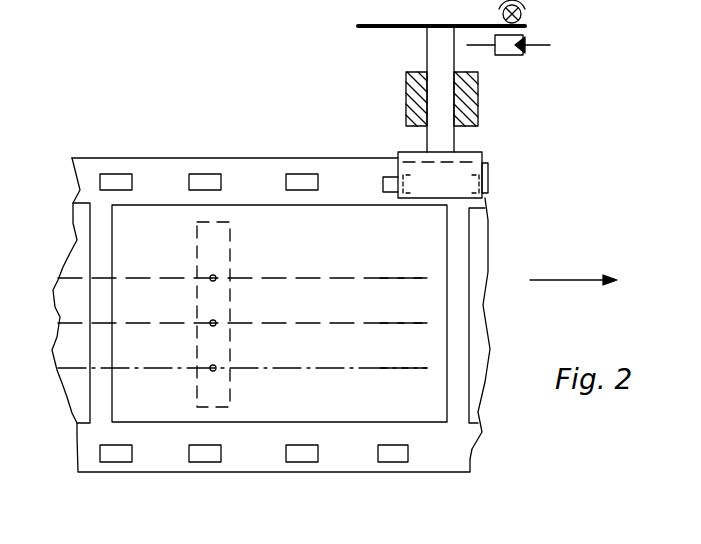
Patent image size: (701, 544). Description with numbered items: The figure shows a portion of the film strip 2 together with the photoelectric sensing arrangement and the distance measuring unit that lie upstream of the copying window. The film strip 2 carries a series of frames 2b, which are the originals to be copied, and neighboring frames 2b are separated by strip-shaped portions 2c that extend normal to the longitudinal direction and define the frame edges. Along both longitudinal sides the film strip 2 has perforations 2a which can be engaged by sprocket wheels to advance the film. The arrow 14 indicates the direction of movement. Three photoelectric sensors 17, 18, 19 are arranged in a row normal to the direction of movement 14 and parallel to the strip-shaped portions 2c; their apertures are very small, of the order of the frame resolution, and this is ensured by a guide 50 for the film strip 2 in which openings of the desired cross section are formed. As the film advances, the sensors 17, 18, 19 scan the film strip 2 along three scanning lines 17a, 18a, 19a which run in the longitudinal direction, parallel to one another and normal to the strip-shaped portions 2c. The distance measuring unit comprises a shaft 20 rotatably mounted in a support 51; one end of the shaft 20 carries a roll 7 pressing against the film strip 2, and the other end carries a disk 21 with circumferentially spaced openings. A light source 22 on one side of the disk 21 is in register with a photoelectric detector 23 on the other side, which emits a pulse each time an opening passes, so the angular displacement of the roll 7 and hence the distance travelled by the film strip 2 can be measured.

The film strip 2 is at (433, 462).
The perforations 2a is at (128, 180).
The frames 2b is at (157, 204).
The strip-shaped portions 2c is at (97, 258).
The roll 7 is at (470, 169).
The direction of movement 14 is at (566, 278).
The photoelectric sensor 17 is at (216, 276).
The photoelectric sensor 18 is at (216, 321).
The photoelectric sensor 19 is at (215, 369).
The scanning line 17a is at (406, 277).
The scanning line 18a is at (408, 322).
The scanning line 19a is at (412, 372).
The shaft 20 is at (427, 55).
The disk 21 is at (368, 28).
The light source 22 is at (522, 18).
The photoelectric detector 23 is at (518, 55).
The guide 50 is at (197, 397).
The support 51 is at (410, 104).